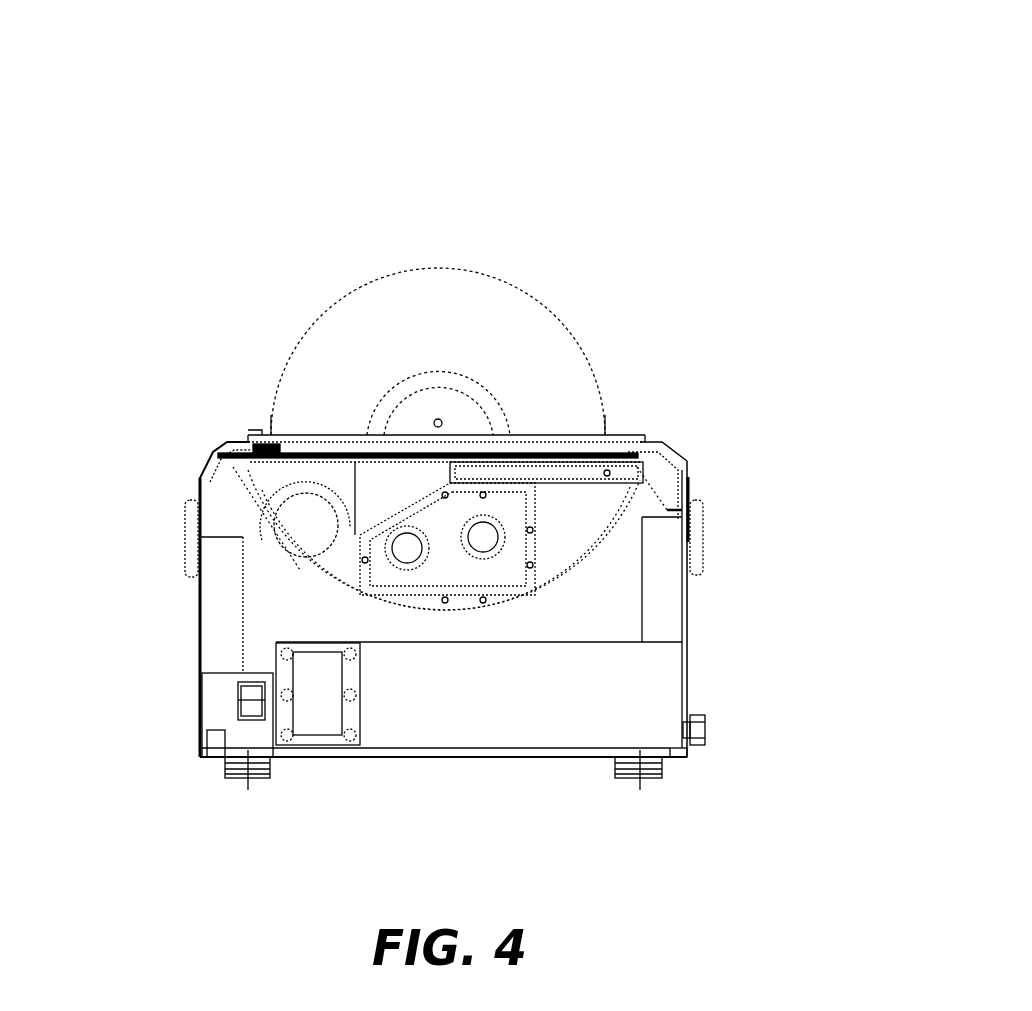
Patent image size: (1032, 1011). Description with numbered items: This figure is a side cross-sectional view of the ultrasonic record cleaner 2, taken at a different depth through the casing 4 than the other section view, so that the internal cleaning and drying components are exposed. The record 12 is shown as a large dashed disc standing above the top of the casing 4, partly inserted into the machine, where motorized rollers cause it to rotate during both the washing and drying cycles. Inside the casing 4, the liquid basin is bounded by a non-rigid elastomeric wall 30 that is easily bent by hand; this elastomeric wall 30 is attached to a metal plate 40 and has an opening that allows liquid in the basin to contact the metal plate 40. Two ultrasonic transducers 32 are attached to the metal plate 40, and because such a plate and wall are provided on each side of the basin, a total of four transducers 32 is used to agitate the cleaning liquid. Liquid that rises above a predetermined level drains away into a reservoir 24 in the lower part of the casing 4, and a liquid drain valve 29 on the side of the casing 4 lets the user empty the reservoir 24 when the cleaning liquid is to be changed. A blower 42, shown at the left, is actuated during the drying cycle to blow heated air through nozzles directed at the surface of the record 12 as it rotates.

The record cleaner 2 is at (632, 214).
The casing 4 is at (677, 448).
The record 12 is at (296, 343).
The reservoir 24 is at (673, 690).
The liquid drain valve 29 is at (707, 732).
The elastomeric wall 30 is at (570, 522).
The ultrasonic transducers 32 is at (407, 552).
The metal plate 40 is at (503, 565).
The blowers 42 is at (296, 540).